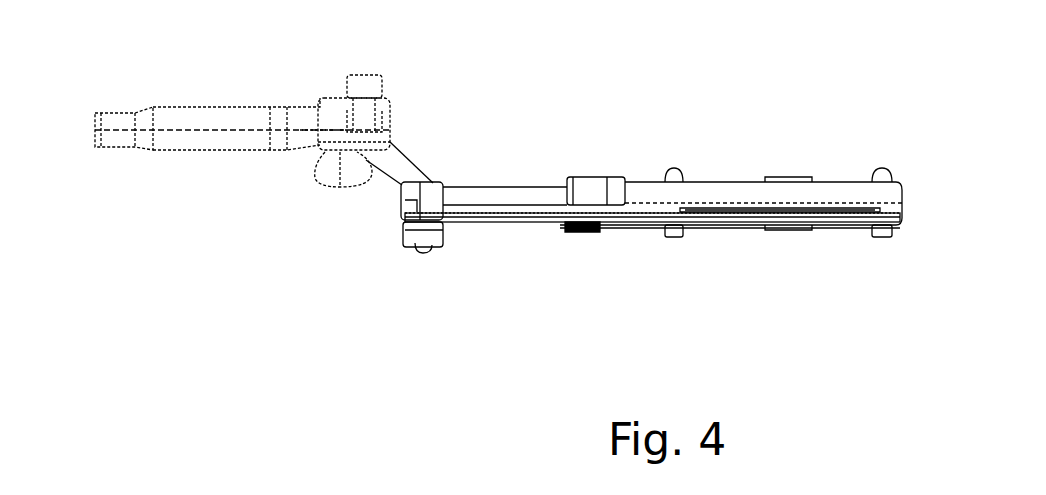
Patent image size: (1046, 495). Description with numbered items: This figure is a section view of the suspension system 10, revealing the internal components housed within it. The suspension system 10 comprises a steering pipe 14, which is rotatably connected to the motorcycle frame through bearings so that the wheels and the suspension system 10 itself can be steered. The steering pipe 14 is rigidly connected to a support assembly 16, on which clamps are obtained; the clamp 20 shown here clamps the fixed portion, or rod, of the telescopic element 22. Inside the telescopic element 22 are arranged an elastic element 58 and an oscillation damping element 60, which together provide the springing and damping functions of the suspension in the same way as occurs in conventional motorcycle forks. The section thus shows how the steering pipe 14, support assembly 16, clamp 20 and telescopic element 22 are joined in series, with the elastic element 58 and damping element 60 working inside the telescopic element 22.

The suspension system 10 is at (522, 110).
The steering pipe 14 is at (215, 108).
The support assembly 16 is at (415, 160).
The clamp 20 is at (405, 245).
The telescopic element 22 is at (564, 180).
The elastic element 58 is at (516, 223).
The oscillation damping element 60 is at (718, 218).